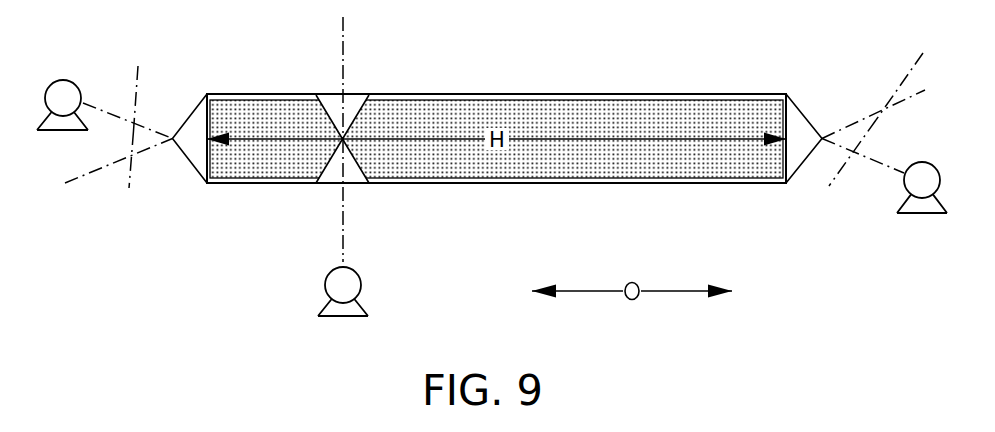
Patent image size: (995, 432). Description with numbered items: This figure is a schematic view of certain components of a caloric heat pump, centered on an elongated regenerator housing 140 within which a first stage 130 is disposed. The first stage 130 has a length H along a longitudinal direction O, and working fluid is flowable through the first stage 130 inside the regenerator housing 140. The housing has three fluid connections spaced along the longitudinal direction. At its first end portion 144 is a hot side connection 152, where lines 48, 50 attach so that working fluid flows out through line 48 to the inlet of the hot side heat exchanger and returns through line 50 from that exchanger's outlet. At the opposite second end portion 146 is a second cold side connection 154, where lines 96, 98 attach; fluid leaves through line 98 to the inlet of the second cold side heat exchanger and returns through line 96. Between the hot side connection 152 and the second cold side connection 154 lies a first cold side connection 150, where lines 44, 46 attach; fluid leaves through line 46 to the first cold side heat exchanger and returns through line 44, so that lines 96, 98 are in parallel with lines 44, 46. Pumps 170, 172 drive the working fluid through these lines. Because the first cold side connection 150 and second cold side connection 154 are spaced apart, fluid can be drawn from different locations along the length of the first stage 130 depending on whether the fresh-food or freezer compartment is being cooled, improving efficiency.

The first stage 130 is at (370, 125).
The regenerator housing 140 is at (510, 93).
The first end portion 144 is at (788, 84).
The second end portion 146 is at (211, 85).
The first cold side connection 150 is at (352, 172).
The hot side connection 152 is at (807, 117).
The second cold side connection 154 is at (199, 149).
The pump 170 is at (920, 173).
The pump 172 is at (62, 91).
The line 44 is at (343, 228).
The line 46 is at (345, 65).
The line 48 is at (887, 86).
The line 50 is at (858, 169).
The line 96 is at (128, 89).
The line 98 is at (130, 186).